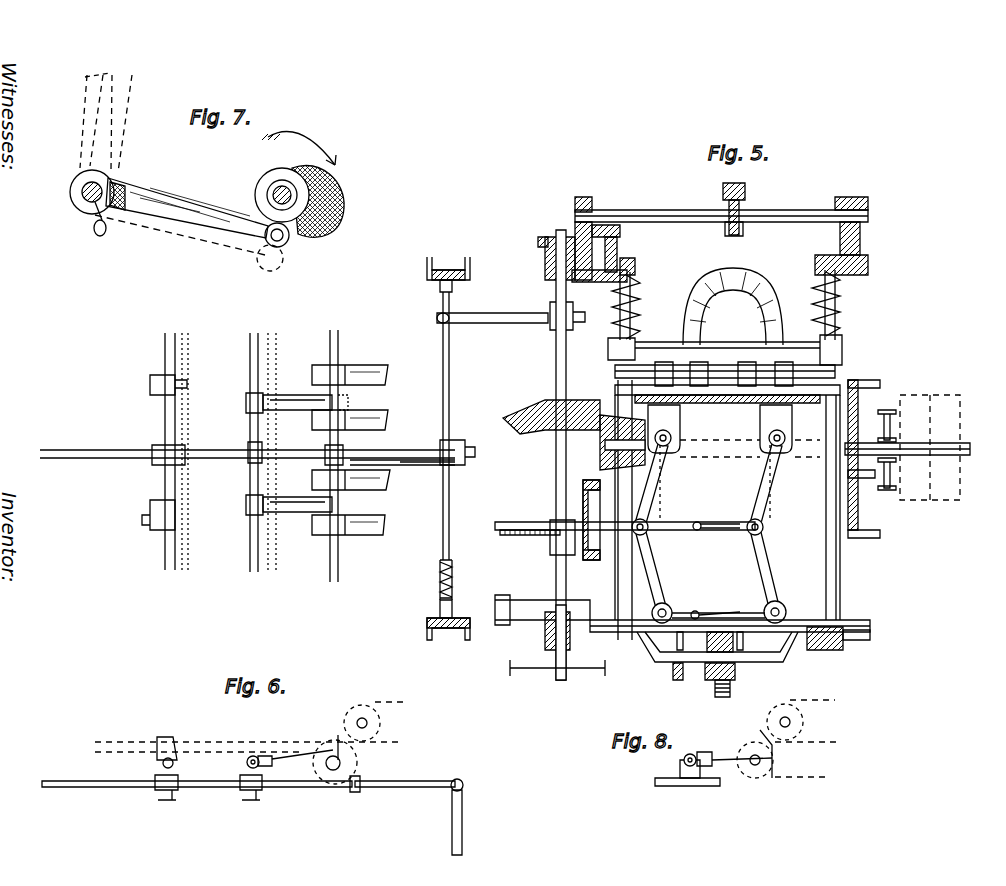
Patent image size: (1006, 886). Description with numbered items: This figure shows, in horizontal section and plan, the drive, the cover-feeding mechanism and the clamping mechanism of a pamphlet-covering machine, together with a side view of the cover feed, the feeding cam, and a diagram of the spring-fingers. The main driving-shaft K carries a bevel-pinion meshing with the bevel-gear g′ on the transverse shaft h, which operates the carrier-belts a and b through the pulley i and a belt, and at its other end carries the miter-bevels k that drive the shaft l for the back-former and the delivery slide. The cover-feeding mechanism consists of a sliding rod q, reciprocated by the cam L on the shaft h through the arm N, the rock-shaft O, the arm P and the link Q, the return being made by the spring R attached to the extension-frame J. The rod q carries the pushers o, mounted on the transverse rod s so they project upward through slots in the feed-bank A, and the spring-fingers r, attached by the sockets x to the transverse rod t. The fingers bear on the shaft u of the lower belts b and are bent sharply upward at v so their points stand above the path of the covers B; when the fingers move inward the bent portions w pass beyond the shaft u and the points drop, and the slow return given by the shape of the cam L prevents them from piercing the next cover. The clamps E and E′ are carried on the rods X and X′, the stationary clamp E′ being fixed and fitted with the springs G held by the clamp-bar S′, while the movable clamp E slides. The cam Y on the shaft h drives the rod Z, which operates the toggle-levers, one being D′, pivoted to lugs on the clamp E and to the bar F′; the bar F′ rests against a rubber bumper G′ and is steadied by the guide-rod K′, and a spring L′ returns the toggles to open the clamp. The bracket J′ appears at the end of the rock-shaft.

In FIG. 7, the arm P is at (107, 122).
In FIG. 5, the arm P is at (461, 448).
In FIG. 6, the arm P is at (467, 822).
In FIG. 7, the arm N is at (192, 224).
In FIG. 5, the arm N is at (511, 305).
In FIG. 7, the pushers o is at (92, 207).
In FIG. 5, the pushers o is at (164, 442).
In FIG. 6, the pushers o is at (167, 741).
In FIG. 7, the cam L is at (313, 185).
In FIG. 5, the cam L is at (582, 332).
In FIG. 7, the transverse shaft h is at (276, 191).
In FIG. 5, the transverse shaft h is at (555, 455).
In FIG. 5, the sliding rod q is at (247, 462).
In FIG. 6, the sliding rod q is at (197, 795).
In FIG. 5, the transverse rod s is at (177, 451).
In FIG. 6, the transverse rod s is at (173, 763).
In FIG. 5, the transverse rod t is at (258, 358).
In FIG. 6, the transverse rod t is at (247, 764).
In FIG. 5, the sockets x is at (261, 461).
In FIG. 5, the spring-fingers r is at (305, 443).
In FIG. 6, the spring-fingers r is at (302, 764).
In FIG. 8, the spring-fingers r is at (713, 761).
In FIG. 5, the shaft u is at (339, 456).
In FIG. 6, the shaft u is at (342, 763).
In FIG. 8, the shaft u is at (752, 765).
In FIG. 5, the carrier-belts b is at (351, 449).
In FIG. 6, the carrier-belts b is at (380, 757).
In FIG. 8, the carrier-belts b is at (802, 789).
In FIG. 5, the link Q is at (590, 365).
In FIG. 6, the link Q is at (406, 796).
In FIG. 5, the rock-shaft O is at (456, 426).
In FIG. 5, the bracket J′ is at (448, 261).
In FIG. 5, the spring R is at (456, 580).
In FIG. 5, the extension-frame J is at (448, 626).
In FIG. 5, the shaft l is at (686, 218).
In FIG. 5, the miter-bevels k is at (552, 242).
In FIG. 5, the spindle Z′ is at (745, 192).
In FIG. 5, the clamp-bar S′ is at (690, 360).
In FIG. 5, the springs G is at (660, 362).
In FIG. 5, the rubber bumper G′ is at (785, 362).
In FIG. 5, the stationary clamp E′ is at (735, 365).
In FIG. 5, the movable clamp E is at (727, 507).
In FIG. 5, the toggle-lever D′ is at (660, 478).
In FIG. 5, the bar F′ is at (725, 612).
In FIG. 5, the spring L′ is at (782, 600).
In FIG. 5, the rod Z is at (675, 522).
In FIG. 5, the cam Y is at (532, 521).
In FIG. 5, the rod X′ is at (607, 510).
In FIG. 5, the bevel-gear g′ is at (528, 410).
In FIG. 5, the pulley i is at (550, 644).
In FIG. 5, the guide-rod K′ is at (673, 670).
In FIG. 5, the rod X is at (843, 507).
In FIG. 5, the main driving-shaft K is at (907, 459).
In FIG. 6, the feed-bank A is at (247, 736).
In FIG. 6, the covers B is at (284, 728).
In FIG. 6, the projecting ends v is at (332, 738).
In FIG. 8, the projecting ends v is at (759, 736).
In FIG. 6, the roller y is at (367, 723).
In FIG. 8, the roller y is at (790, 722).
In FIG. 6, the carrier-belts a is at (390, 692).
In FIG. 8, the carrier-belts a is at (807, 712).
In FIG. 8, the bent portions w is at (774, 778).